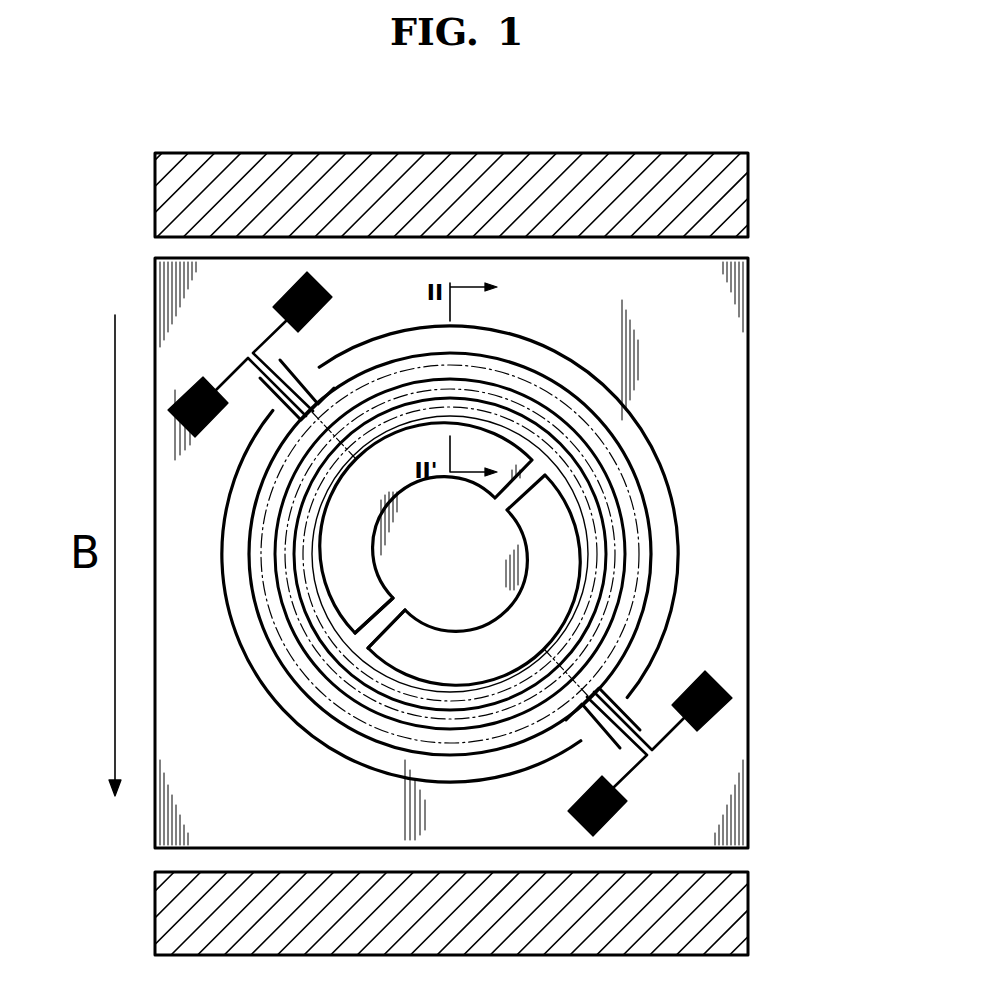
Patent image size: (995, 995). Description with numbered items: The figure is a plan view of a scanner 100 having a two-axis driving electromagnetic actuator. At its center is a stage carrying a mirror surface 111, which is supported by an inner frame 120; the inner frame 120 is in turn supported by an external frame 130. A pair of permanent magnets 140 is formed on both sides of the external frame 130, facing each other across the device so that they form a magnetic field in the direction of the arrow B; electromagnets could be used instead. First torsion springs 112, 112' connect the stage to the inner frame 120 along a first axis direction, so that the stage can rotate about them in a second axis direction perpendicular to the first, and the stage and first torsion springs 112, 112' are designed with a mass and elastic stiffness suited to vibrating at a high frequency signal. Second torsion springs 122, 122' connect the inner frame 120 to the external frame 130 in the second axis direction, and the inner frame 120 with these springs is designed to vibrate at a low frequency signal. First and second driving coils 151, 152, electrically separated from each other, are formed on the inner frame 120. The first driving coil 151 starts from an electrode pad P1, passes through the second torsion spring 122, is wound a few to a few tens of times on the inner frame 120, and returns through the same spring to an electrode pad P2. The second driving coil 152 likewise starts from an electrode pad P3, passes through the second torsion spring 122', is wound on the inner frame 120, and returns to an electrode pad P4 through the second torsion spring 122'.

The scanner 100 is at (68, 158).
The permanent magnets 140 is at (736, 194).
The external frame 130 is at (736, 358).
The inner frame 120 is at (622, 436).
The first driving coil 151 is at (417, 353).
The second driving coil 152 is at (556, 392).
The first torsion spring 112 is at (424, 554).
The first torsion spring 112' is at (214, 634).
The mirror surface 111 is at (503, 557).
The second torsion spring 122 is at (299, 380).
The second torsion spring 122' is at (687, 702).
The electrode pad P1 is at (280, 298).
The electrode pad P2 is at (178, 402).
The electrode pad P3 is at (732, 698).
The electrode pad P4 is at (627, 805).